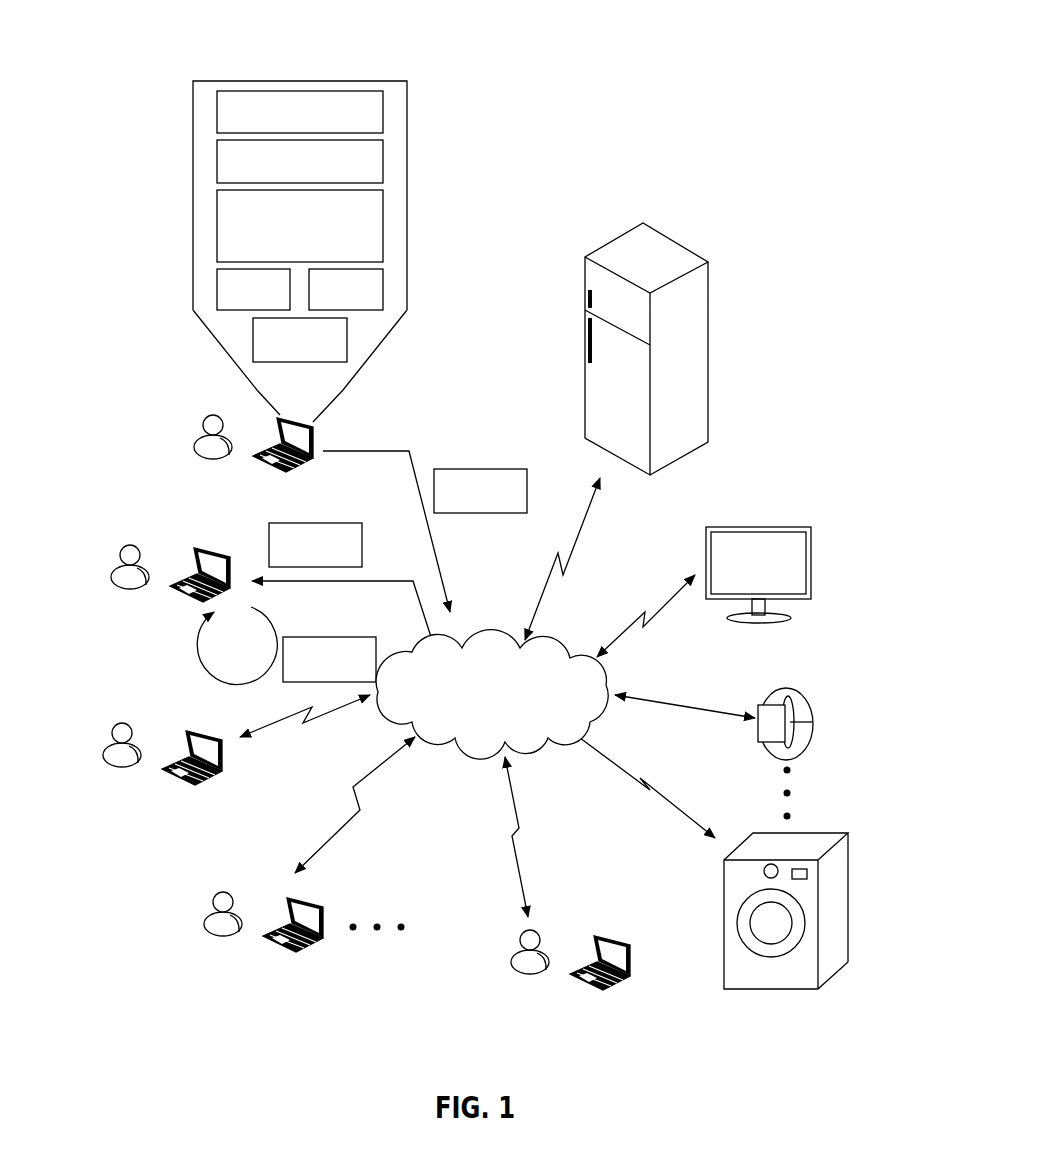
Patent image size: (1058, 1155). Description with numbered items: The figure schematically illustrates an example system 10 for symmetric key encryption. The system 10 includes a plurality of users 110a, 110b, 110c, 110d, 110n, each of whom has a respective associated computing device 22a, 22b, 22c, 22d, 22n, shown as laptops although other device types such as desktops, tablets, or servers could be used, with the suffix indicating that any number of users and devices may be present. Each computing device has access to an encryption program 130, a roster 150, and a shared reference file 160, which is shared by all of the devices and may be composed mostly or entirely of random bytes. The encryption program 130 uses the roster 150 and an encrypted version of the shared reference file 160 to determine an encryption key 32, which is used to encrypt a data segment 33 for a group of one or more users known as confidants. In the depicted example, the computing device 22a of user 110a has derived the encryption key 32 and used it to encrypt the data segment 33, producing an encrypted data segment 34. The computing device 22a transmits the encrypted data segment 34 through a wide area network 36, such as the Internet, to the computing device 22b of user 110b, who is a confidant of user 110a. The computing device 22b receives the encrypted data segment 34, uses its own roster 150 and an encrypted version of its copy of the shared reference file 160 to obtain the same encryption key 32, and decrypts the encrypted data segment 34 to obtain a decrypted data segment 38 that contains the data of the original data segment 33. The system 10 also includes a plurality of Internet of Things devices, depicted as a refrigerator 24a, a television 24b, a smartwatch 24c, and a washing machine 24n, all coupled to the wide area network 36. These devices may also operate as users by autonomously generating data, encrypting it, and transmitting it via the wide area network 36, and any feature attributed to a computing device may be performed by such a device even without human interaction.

The system 10 is at (860, 40).
The encryption program 130 is at (384, 112).
The roster 150 is at (384, 162).
The shared reference file 160 is at (384, 225).
The encryption key 32 is at (217, 290).
The data segment 33 is at (384, 290).
The encrypted data segment 34 is at (347, 342).
The decrypted data segment 38 is at (355, 637).
The wide area network 36 is at (595, 715).
The user 110a is at (203, 430).
The user 110b is at (118, 558).
The user 110c is at (112, 740).
The user 110d is at (213, 908).
The user 110n is at (518, 945).
The computing device 22a is at (280, 470).
The computing device 22b is at (195, 605).
The computing device 22c is at (185, 787).
The computing device 22d is at (285, 955).
The computing device 22n is at (590, 992).
The refrigerator 24a is at (688, 392).
The television 24b is at (811, 563).
The smartwatch 24c is at (812, 724).
The washing machine 24n is at (848, 898).